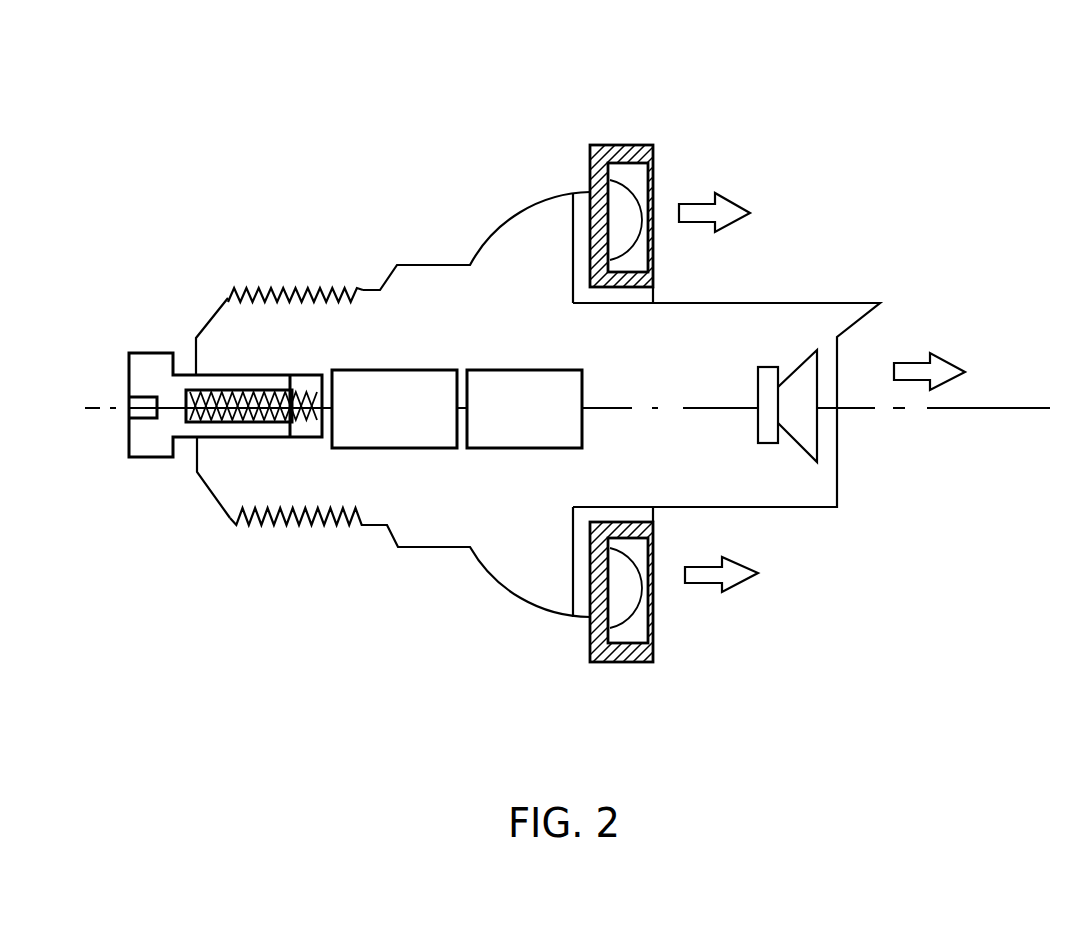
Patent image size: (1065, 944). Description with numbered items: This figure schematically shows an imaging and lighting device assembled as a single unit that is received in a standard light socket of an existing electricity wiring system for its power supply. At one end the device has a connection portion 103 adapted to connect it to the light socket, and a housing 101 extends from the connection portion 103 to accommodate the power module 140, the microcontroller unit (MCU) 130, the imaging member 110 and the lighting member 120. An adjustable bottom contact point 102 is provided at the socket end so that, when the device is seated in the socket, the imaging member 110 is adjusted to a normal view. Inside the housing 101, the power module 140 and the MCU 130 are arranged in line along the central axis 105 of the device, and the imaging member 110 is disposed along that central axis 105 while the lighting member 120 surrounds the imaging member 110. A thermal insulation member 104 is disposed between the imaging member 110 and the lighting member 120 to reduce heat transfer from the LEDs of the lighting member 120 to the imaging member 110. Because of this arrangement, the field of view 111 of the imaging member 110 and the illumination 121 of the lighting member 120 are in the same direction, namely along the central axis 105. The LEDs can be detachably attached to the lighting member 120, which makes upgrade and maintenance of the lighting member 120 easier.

The housing 101 is at (473, 508).
The adjustable bottom contact point 102 is at (152, 437).
The connection portion 103 is at (235, 335).
The thermal insulation member 104 is at (583, 260).
The central axis 105 is at (713, 407).
The imaging member 110 is at (777, 440).
The field of view 111 is at (957, 371).
The lighting member 120 is at (627, 220).
The illumination 121 is at (742, 393).
The microcontroller unit (MCU) 130 is at (537, 368).
The power module 140 is at (387, 368).